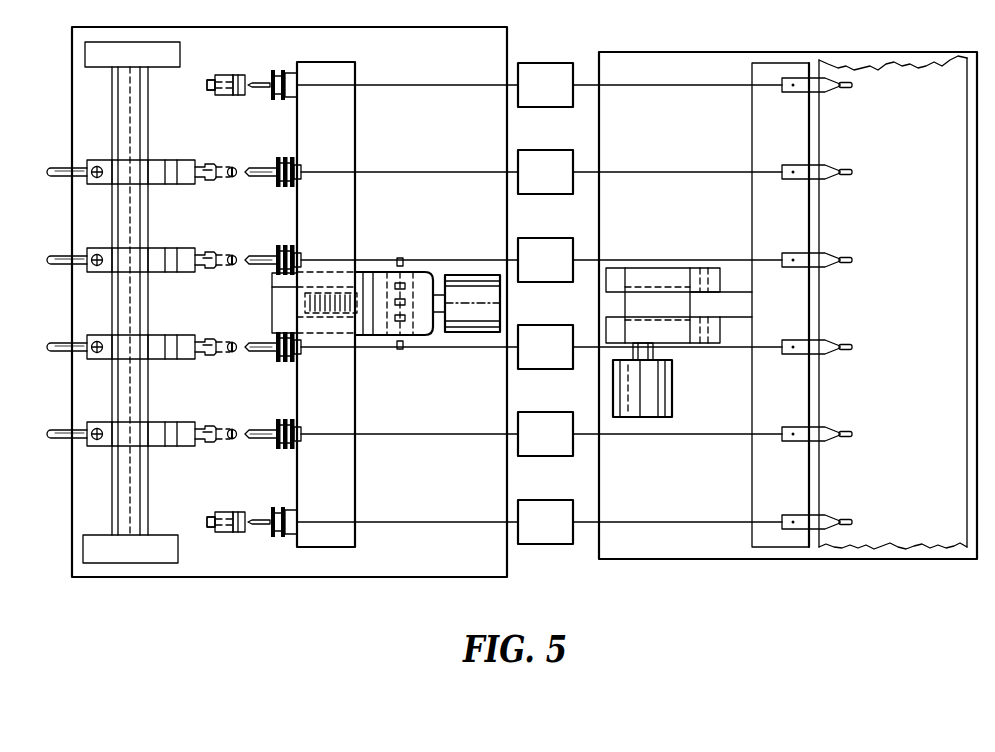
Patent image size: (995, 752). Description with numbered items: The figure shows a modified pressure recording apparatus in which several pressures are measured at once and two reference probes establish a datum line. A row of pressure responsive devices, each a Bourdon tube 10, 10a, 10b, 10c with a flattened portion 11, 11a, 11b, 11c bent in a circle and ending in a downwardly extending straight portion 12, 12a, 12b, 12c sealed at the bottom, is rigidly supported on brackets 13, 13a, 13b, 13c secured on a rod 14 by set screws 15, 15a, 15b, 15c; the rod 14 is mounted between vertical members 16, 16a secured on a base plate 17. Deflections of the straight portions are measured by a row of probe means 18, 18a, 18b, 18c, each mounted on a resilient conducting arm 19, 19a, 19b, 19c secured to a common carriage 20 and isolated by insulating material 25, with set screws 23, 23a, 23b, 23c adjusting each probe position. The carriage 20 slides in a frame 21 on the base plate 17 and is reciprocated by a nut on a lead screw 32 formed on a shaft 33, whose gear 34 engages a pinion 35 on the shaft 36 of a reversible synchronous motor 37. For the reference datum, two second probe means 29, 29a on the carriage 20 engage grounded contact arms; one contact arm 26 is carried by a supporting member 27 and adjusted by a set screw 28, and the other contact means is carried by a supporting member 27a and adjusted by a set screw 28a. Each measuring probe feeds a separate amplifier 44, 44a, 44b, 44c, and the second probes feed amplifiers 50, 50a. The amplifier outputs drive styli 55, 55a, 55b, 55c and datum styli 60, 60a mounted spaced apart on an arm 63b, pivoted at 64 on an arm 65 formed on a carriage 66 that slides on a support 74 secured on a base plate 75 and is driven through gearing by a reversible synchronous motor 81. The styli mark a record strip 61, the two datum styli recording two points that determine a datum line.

The Bourdon tube 10 is at (56, 428).
The Bourdon tube 10a is at (60, 341).
The Bourdon tube 10b is at (60, 254).
The Bourdon tube 10c is at (60, 166).
The flattened portion 11 is at (207, 442).
The flattened portion 11a is at (207, 355).
The flattened portion 11b is at (207, 268).
The flattened portion 11c is at (207, 180).
The straight portion 12 is at (232, 428).
The pressure responsive device 12a is at (232, 341).
The pressure responsive device 12b is at (232, 254).
The pressure responsive device 12c is at (232, 166).
The bracket 13 is at (163, 446).
The bracket 13a is at (163, 359).
The bracket 13b is at (163, 272).
The bracket 13c is at (163, 184).
The rod 14 is at (118, 110).
The set screw 15 is at (98, 442).
The set screw 15a is at (98, 355).
The set screw 15b is at (98, 268).
The set screw 15c is at (98, 180).
The vertical member 16 is at (135, 563).
The vertical member 16a is at (150, 48).
The base plate 17 is at (370, 577).
The probe means 18 is at (252, 440).
The probe means 18a is at (252, 353).
The probe means 18b is at (252, 266).
The probe means 18c is at (252, 178).
The arm 19 is at (260, 402).
The arm 19a is at (258, 337).
The arm 19b is at (258, 250).
The arm 19c is at (258, 162).
The carriage 20 is at (320, 64).
The frame 21 is at (358, 308).
The set screw 23 is at (300, 441).
The set screw 23a is at (299, 354).
The set screw 23b is at (299, 254).
The set screw 23c is at (299, 166).
The insulating material 25 is at (271, 440).
The contact arm 26 is at (247, 74).
The supporting member 27 is at (233, 511).
The supporting member 27a is at (233, 96).
The set screw 28 is at (207, 522).
The set screw 28a is at (208, 86).
The second probe means 29 is at (252, 519).
The second probe means 29a is at (252, 90).
The lead screw 32 is at (306, 313).
The shaft 33 is at (377, 272).
The gear 34 is at (403, 270).
The pinion 35 is at (406, 340).
The shaft 36 is at (441, 313).
The reversible synchronous motor 37 is at (460, 276).
The amplifier 44 is at (545, 456).
The amplifier 44a is at (545, 369).
The amplifier 44b is at (545, 282).
The amplifier 44c is at (545, 194).
The amplifier 50 is at (545, 544).
The amplifier 50a is at (545, 108).
The recording stylus 55 is at (850, 439).
The stylus 55a is at (850, 352).
The stylus 55b is at (850, 265).
The stylus 55c is at (850, 177).
The recording stylus 60 is at (848, 520).
The stylus 60a is at (850, 90).
The record strip 61 is at (930, 548).
The arm 63b is at (775, 62).
The pivot 64 is at (704, 268).
The arm 65 is at (690, 343).
The carriage 66 is at (636, 270).
The support 74 is at (661, 302).
The base plate 75 is at (686, 559).
The reversible synchronous motor 81 is at (672, 400).